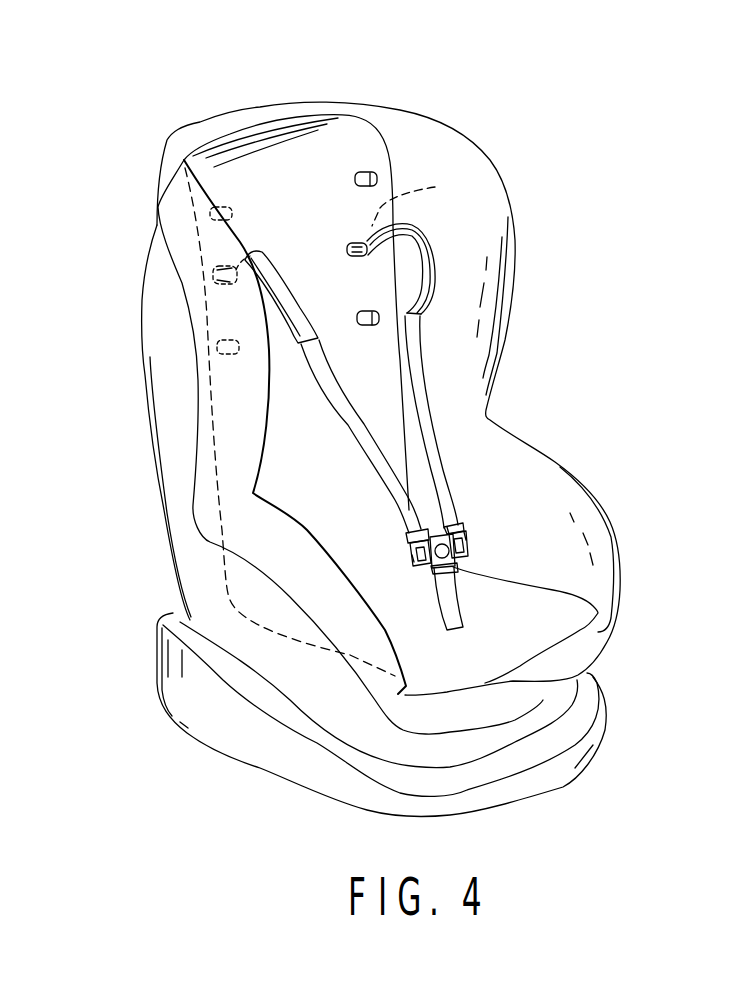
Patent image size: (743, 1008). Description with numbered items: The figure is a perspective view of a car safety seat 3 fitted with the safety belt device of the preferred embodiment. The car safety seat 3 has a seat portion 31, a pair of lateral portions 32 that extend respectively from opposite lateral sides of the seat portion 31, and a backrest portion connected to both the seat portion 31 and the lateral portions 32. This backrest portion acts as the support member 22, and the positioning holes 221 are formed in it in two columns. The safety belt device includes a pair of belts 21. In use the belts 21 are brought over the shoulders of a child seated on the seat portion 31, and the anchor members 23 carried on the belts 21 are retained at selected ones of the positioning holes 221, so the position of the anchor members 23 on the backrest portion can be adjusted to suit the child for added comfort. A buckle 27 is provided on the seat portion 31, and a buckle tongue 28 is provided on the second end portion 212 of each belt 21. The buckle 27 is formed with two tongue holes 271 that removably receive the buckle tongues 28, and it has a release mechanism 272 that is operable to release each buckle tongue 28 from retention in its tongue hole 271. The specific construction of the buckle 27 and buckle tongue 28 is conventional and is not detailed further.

The car safety seat 3 is at (527, 238).
The belts 21 is at (358, 427).
The support member 22 is at (288, 160).
The positioning holes 221 is at (375, 179).
The anchor members 23 is at (346, 247).
The second end portion 212 is at (451, 518).
The buckle 27 is at (455, 566).
The tongue hole 271 is at (465, 533).
The release mechanism 272 is at (447, 526).
The buckle tongue 28 is at (466, 549).
The seat portion 31 is at (507, 641).
The lateral portions 32 is at (478, 303).